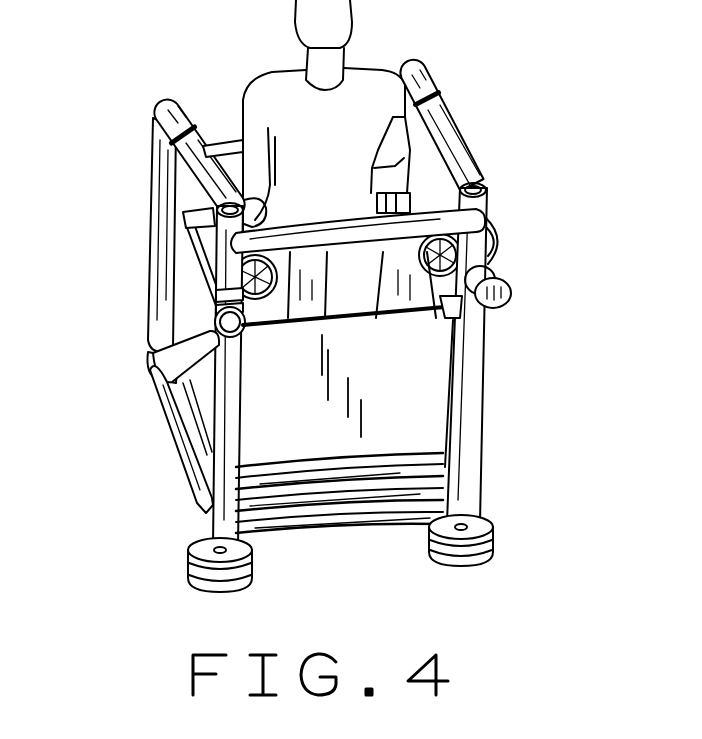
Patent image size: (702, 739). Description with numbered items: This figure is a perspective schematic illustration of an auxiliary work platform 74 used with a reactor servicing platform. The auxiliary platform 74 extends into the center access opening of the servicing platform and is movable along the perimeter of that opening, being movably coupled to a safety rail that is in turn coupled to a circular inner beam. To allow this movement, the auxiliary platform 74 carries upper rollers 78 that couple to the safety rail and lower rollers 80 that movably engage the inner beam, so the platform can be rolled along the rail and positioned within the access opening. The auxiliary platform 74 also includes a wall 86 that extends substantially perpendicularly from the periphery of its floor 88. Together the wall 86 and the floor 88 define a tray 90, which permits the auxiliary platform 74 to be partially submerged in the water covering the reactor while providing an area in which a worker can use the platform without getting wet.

The auxiliary platform 74 is at (322, 302).
The upper rollers 78 is at (510, 292).
The lower rollers 80 is at (495, 540).
The wall 86 is at (415, 408).
The floor 88 is at (187, 421).
The tray 90 is at (190, 215).